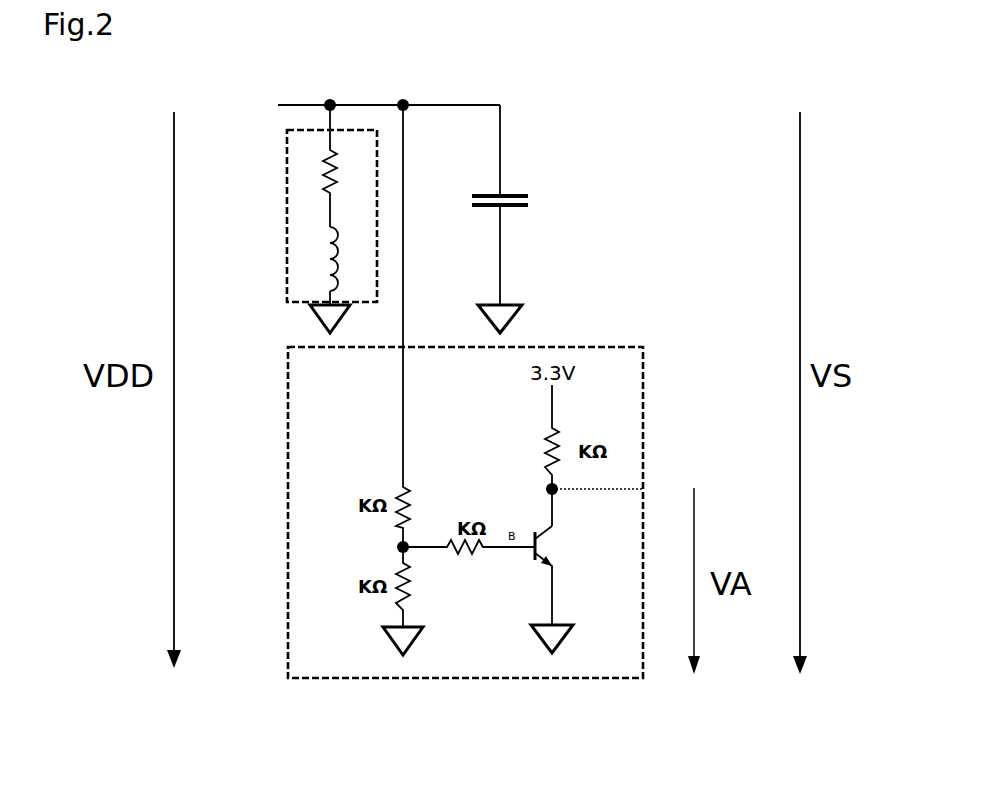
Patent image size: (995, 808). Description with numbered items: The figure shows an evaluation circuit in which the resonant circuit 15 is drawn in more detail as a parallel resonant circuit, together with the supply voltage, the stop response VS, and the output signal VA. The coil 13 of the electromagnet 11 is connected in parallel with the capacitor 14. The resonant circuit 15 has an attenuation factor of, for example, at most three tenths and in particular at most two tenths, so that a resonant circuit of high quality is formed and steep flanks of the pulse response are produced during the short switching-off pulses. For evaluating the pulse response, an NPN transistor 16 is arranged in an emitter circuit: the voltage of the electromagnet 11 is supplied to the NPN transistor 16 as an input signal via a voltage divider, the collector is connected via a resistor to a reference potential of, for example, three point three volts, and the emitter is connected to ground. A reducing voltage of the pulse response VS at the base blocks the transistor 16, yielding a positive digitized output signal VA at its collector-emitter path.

The electromagnet 11 is at (273, 196).
The coil 13 is at (332, 273).
The capacitor 14 is at (516, 217).
The resonant circuit 15 is at (572, 108).
The NPN transistor 16 is at (542, 523).